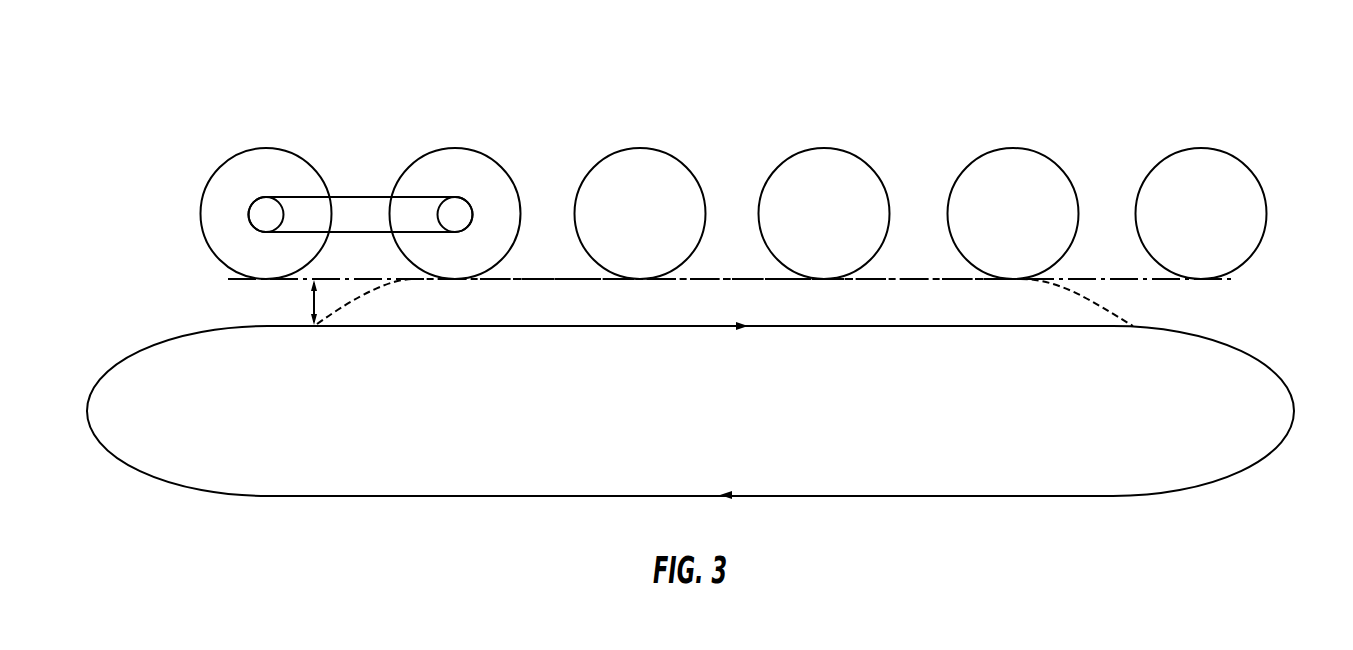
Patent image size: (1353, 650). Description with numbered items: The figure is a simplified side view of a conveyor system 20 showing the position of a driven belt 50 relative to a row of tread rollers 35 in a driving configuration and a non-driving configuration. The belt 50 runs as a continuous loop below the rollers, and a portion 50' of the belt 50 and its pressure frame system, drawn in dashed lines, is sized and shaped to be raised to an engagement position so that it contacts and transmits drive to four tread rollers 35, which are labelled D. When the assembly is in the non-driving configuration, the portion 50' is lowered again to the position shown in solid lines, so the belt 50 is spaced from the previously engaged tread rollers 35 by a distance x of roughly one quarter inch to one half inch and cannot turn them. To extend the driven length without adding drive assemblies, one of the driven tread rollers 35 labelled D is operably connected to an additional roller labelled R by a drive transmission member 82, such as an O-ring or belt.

The belt conveyor system 20 is at (946, 66).
The tread rollers 35 is at (263, 148).
The drive transmission members 82 is at (363, 196).
The portion of the belt 50' is at (714, 224).
The belt 50 is at (690, 433).